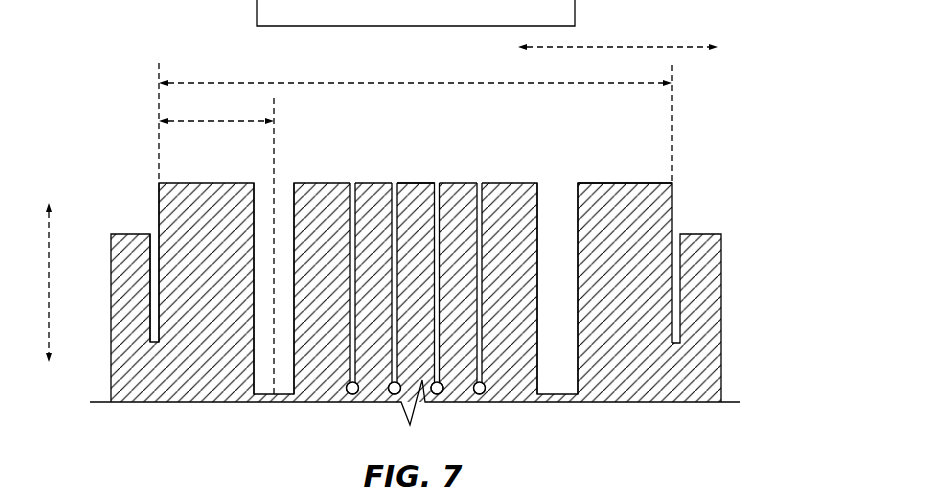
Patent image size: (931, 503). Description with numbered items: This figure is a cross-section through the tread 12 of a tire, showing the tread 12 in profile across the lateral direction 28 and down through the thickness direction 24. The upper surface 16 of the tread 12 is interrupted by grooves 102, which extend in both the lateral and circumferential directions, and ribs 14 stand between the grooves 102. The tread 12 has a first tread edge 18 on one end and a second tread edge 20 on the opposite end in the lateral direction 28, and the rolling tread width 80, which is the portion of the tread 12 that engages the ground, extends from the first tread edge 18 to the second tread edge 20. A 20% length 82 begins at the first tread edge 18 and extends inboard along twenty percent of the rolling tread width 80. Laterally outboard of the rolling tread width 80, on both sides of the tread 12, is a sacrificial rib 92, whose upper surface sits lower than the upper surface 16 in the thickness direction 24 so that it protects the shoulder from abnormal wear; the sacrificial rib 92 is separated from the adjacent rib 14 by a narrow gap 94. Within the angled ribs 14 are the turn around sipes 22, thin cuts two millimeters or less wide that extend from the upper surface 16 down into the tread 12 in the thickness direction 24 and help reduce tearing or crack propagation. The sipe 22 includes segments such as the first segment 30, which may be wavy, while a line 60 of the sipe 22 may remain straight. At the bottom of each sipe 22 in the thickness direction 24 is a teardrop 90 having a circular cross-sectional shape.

The tread 12 is at (176, 46).
The rib 14 is at (665, 223).
The upper surface 16 is at (415, 166).
The first tread edge 18 is at (159, 193).
The second tread edge 20 is at (673, 192).
The turn around sipe 22 is at (391, 286).
The thickness direction 24 is at (47, 285).
The lateral direction 28 is at (618, 46).
The first segment 30 is at (351, 285).
The line 60 is at (399, 247).
The rolling tread width 80 is at (413, 83).
The 20% length 82 is at (203, 120).
The teardrop 90 is at (346, 390).
The sacrificial rib 92 is at (113, 313).
The gap 94 is at (155, 238).
The groove 102 is at (282, 190).